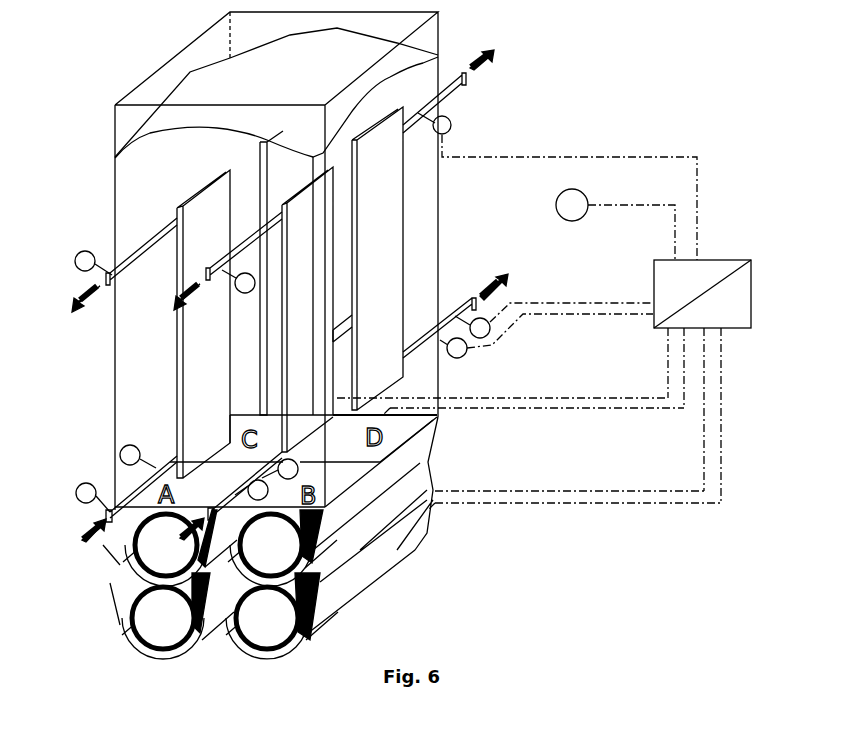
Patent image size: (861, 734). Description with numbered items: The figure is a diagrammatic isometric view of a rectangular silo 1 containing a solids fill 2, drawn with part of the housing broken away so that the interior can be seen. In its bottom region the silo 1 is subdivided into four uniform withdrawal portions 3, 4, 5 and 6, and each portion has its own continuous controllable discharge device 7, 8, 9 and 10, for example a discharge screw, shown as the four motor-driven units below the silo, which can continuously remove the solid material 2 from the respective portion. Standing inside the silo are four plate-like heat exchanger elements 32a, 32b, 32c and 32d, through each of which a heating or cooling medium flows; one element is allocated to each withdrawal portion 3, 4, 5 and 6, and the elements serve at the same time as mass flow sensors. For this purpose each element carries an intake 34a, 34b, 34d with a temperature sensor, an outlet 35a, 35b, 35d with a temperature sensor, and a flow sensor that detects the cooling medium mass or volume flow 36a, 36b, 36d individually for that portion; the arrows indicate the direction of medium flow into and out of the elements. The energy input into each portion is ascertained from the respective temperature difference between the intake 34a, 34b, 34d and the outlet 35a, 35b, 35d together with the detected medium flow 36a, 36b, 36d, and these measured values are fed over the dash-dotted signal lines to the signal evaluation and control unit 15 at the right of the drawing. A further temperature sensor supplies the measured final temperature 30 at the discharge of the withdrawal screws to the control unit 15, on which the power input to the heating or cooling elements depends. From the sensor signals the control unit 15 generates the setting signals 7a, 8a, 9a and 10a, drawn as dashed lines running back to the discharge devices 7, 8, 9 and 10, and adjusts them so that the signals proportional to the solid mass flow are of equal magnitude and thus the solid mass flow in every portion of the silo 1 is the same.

The silo 1 is at (115, 128).
The solids fill 2 is at (272, 58).
The portion 3 is at (108, 525).
The portion 4 is at (340, 484).
The portion 5 is at (222, 428).
The portion 6 is at (417, 430).
The discharge device 7 is at (140, 562).
The discharge device 8 is at (312, 515).
The discharge device 9 is at (140, 628).
The discharge device 10 is at (300, 630).
The signal evaluation and control unit 15 is at (728, 312).
The final temperature 30 is at (580, 198).
The heat exchanger element 32a is at (183, 348).
The heat exchanger element 32b is at (312, 335).
The heat exchanger element 32c is at (262, 155).
The heat exchanger element 32d is at (397, 200).
The intake 34a is at (76, 493).
The intake 34b is at (248, 490).
The intake 34d is at (491, 329).
The outlet 35a is at (76, 258).
The outlet 35b is at (238, 292).
The outlet 35d is at (448, 118).
The cooling medium mass or volume flow 36a is at (120, 455).
The cooling medium mass or volume flow 36b is at (297, 465).
The cooling medium mass or volume flow 36d is at (462, 358).
The setting signal 7a is at (530, 398).
The setting signal 8a is at (512, 410).
The setting signal 9a is at (556, 491).
The setting signal 10a is at (578, 503).